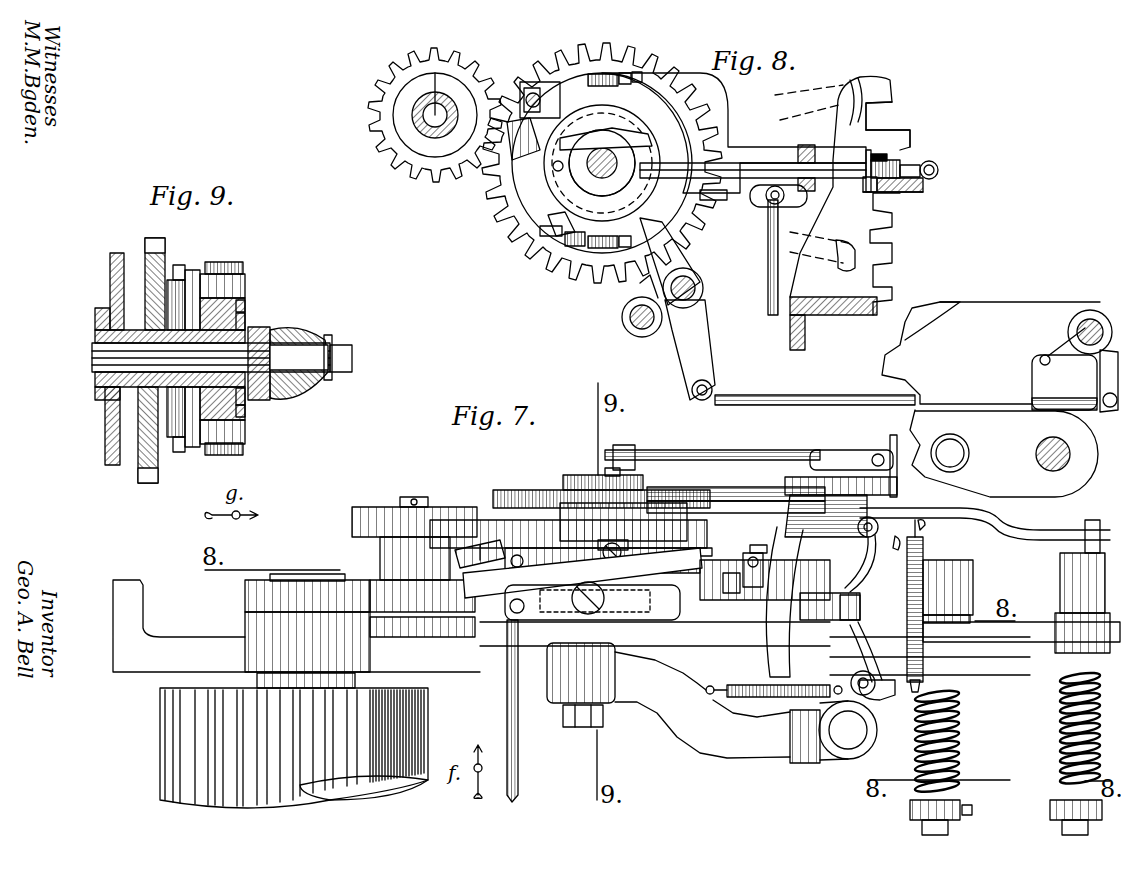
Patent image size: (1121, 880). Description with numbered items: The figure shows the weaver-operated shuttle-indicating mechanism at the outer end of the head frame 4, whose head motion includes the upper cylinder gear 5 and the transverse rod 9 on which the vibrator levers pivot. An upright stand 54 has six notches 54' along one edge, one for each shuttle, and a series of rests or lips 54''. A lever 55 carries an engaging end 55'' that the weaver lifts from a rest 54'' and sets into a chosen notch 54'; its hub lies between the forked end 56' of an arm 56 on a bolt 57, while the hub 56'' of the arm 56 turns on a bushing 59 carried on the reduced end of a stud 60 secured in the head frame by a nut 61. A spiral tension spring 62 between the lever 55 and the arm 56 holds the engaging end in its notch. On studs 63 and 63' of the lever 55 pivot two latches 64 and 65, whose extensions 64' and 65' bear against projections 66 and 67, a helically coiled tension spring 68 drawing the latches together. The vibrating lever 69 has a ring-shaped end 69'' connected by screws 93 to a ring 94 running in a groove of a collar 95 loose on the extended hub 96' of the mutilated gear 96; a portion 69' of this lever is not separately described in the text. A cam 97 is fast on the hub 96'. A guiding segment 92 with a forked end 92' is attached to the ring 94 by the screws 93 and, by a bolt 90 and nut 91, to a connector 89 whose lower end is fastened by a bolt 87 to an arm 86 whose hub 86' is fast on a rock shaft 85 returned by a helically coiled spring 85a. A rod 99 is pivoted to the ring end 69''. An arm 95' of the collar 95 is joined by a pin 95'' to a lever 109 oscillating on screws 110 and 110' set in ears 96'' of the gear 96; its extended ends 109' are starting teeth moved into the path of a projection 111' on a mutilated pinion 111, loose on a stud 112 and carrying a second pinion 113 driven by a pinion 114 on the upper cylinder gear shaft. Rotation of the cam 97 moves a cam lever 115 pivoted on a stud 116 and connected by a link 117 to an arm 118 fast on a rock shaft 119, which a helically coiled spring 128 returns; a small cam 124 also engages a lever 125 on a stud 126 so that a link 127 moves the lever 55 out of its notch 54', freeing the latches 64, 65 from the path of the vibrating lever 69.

In FIG. 8, the head frame 4 is at (1042, 490).
In FIG. 7, the head frame 4 is at (140, 662).
In FIG. 7, the upper cylinder gear 5 is at (188, 720).
In FIG. 8, the transverse rod 9 is at (1062, 458).
In FIG. 8, the upright stand 54 is at (867, 211).
In FIG. 7, the upright stand 54 is at (838, 480).
In FIG. 8, the notches 54' is at (905, 186).
In FIG. 8, the rests or lips 54'' is at (922, 183).
In FIG. 8, the lever 55 is at (906, 197).
In FIG. 7, the lever 55 is at (1001, 670).
In FIG. 7, the engaging end 55'' is at (853, 456).
In FIG. 7, the arm 56 is at (702, 718).
In FIG. 7, the forked shaped end 56' is at (848, 752).
In FIG. 9, the hub 56'' is at (296, 349).
In FIG. 7, the hub 56'' is at (575, 697).
In FIG. 7, the bolt 57 is at (842, 742).
In FIG. 9, the bushing 59 is at (312, 350).
In FIG. 8, the stud 60 is at (586, 172).
In FIG. 9, the stud 60 is at (95, 352).
In FIG. 9, the nut 61 is at (352, 372).
In FIG. 7, the nut 61 is at (580, 728).
In FIG. 7, the spiral tension spring 62 is at (800, 684).
In FIG. 7, the stud 63 is at (854, 535).
In FIG. 7, the stud 63' is at (875, 671).
In FIG. 8, the latch 64 is at (902, 158).
In FIG. 7, the latch 64 is at (854, 563).
In FIG. 8, the extension 64' is at (938, 167).
In FIG. 7, the extension 64' is at (939, 527).
In FIG. 7, the latch 65 is at (872, 652).
In FIG. 7, the extension 65' is at (887, 703).
In FIG. 8, the projection 66 is at (922, 185).
In FIG. 7, the projection 66 is at (895, 546).
In FIG. 7, the projection 67 is at (919, 676).
In FIG. 8, the helically coiled tension spring 68 is at (932, 164).
In FIG. 7, the helically coiled tension spring 68 is at (923, 553).
In FIG. 8, the vibrating lever 69 is at (753, 173).
In FIG. 7, the vibrating lever 69 is at (830, 596).
In FIG. 8, the stop 69' is at (903, 154).
In FIG. 7, the stop 69' is at (869, 600).
In FIG. 8, the ring shaped formation 69'' is at (604, 181).
In FIG. 9, the ring shaped formation 69'' is at (250, 362).
In FIG. 7, the ring shaped formation 69'' is at (562, 625).
In FIG. 7, the rock shaft 85 is at (923, 822).
In FIG. 7, the helically coiled spring 85a is at (945, 757).
In FIG. 7, the arm 86 is at (730, 573).
In FIG. 7, the hub 86' is at (964, 587).
In FIG. 7, the bolt 87 is at (758, 545).
In FIG. 8, the connector 89 is at (772, 262).
In FIG. 7, the connector 89 is at (751, 560).
In FIG. 8, the bolt 90 is at (773, 203).
In FIG. 8, the nut 91 is at (790, 200).
In FIG. 8, the guiding segment 92 is at (705, 148).
In FIG. 7, the guiding segment 92 is at (726, 596).
In FIG. 8, the forked shaped attached end 92' is at (580, 163).
In FIG. 9, the forked shaped attached end 92' is at (236, 357).
In FIG. 8, the screws 93 is at (623, 73).
In FIG. 9, the screws 93 is at (222, 284).
In FIG. 7, the screws 93 is at (572, 605).
In FIG. 9, the ring 94 is at (245, 310).
In FIG. 8, the collar 95 is at (549, 184).
In FIG. 9, the collar 95 is at (269, 372).
In FIG. 7, the collar 95 is at (582, 527).
In FIG. 8, the extension or arm 95' is at (511, 190).
In FIG. 7, the extension or arm 95' is at (511, 593).
In FIG. 7, the pin 95'' is at (497, 531).
In FIG. 8, the mutilated gear 96 is at (610, 163).
In FIG. 9, the mutilated gear 96 is at (132, 364).
In FIG. 7, the mutilated gear 96 is at (576, 528).
In FIG. 9, the extended hub 96' is at (182, 377).
In FIG. 8, the lugs or ears 96'' is at (515, 261).
In FIG. 9, the lugs or ears 96'' is at (198, 360).
In FIG. 7, the lugs or ears 96'' is at (601, 509).
In FIG. 9, the cam 97 is at (112, 282).
In FIG. 7, the cam 97 is at (655, 512).
In FIG. 8, the connector or rod 99 is at (522, 84).
In FIG. 7, the connector or rod 99 is at (510, 700).
In FIG. 9, the lever 109 is at (206, 365).
In FIG. 7, the lever 109 is at (602, 518).
In FIG. 8, the extended ends 109' is at (585, 167).
In FIG. 7, the extended ends 109' is at (583, 520).
In FIG. 8, the screw 110 is at (666, 62).
In FIG. 9, the screw 110 is at (183, 284).
In FIG. 7, the screw 110 is at (584, 491).
In FIG. 8, the screw 110' is at (546, 259).
In FIG. 9, the screw 110' is at (186, 445).
In FIG. 8, the mutilated pinion 111 is at (416, 115).
In FIG. 7, the mutilated pinion 111 is at (406, 537).
In FIG. 8, the projection 111' is at (463, 75).
In FIG. 7, the projection 111' is at (461, 523).
In FIG. 8, the stud 112 is at (420, 130).
In FIG. 7, the stud 112 is at (412, 505).
In FIG. 7, the second pinion 113 is at (397, 593).
In FIG. 7, the pinion 114 is at (323, 593).
In FIG. 8, the cam lever 115 is at (685, 252).
In FIG. 7, the cam lever 115 is at (680, 500).
In FIG. 8, the stud 116 is at (696, 288).
In FIG. 8, the link 117 is at (800, 394).
In FIG. 7, the link 117 is at (733, 502).
In FIG. 8, the arm 118 is at (1092, 372).
In FIG. 8, the rock shaft 119 is at (1092, 325).
In FIG. 7, the rock shaft 119 is at (1065, 823).
In FIG. 9, the small cam 124 is at (98, 313).
In FIG. 7, the small cam 124 is at (597, 487).
In FIG. 8, the lever 125 is at (632, 284).
In FIG. 8, the stud 126 is at (636, 322).
In FIG. 7, the link or connector 127 is at (722, 455).
In FIG. 8, the helically coiled spring 128 is at (1046, 355).
In FIG. 7, the helically coiled spring 128 is at (1060, 740).